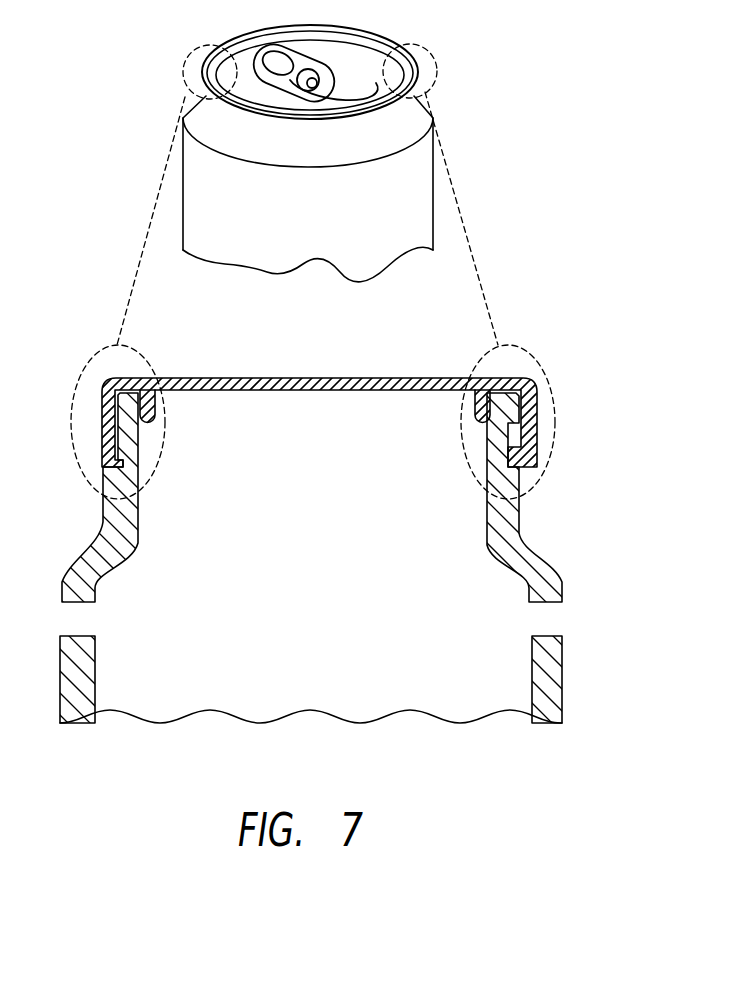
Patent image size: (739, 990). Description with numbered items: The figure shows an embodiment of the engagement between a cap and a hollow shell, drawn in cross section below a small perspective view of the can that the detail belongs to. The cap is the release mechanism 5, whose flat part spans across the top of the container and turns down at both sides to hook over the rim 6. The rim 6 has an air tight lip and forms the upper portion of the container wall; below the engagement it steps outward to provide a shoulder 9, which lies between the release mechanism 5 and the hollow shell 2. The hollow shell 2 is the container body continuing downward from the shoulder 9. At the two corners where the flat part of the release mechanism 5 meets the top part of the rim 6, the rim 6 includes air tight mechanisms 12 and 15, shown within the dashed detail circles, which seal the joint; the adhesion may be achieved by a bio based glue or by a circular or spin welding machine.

The hollow shell 2 is at (563, 668).
The release mechanism 5 is at (397, 378).
The rim 6 is at (103, 518).
The shoulder 9 is at (523, 543).
The air tight mechanism 12 is at (533, 358).
The air tight mechanism 15 is at (92, 360).